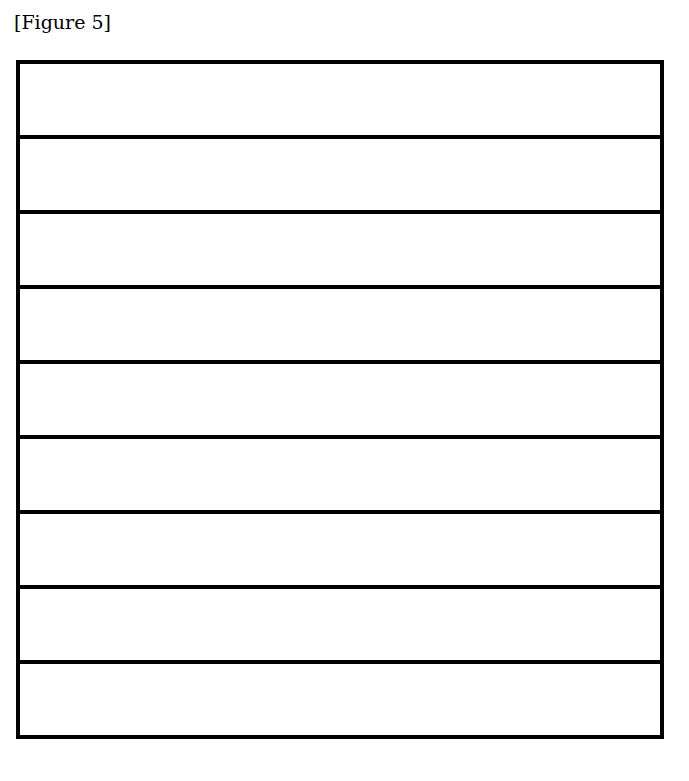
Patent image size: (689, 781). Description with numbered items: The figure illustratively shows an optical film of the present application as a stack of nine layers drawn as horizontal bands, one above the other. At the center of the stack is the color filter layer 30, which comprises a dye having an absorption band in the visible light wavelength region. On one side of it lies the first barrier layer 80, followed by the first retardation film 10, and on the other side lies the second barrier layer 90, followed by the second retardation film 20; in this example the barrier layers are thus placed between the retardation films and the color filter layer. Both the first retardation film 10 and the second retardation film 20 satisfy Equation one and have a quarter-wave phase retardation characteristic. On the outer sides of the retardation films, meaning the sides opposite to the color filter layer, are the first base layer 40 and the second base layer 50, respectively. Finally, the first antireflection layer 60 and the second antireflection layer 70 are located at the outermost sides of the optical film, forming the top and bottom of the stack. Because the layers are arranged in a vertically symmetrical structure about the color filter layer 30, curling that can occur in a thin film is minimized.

The first antireflection layer 60 is at (340, 99).
The first base layer 40 is at (340, 174).
The first retardation film 10 is at (340, 249).
The first barrier layer 80 is at (340, 324).
The color filter layer 30 is at (340, 399).
The second barrier layer 90 is at (340, 474).
The second retardation film 20 is at (340, 549).
The second base layer 50 is at (340, 624).
The second antireflection layer 70 is at (340, 699).